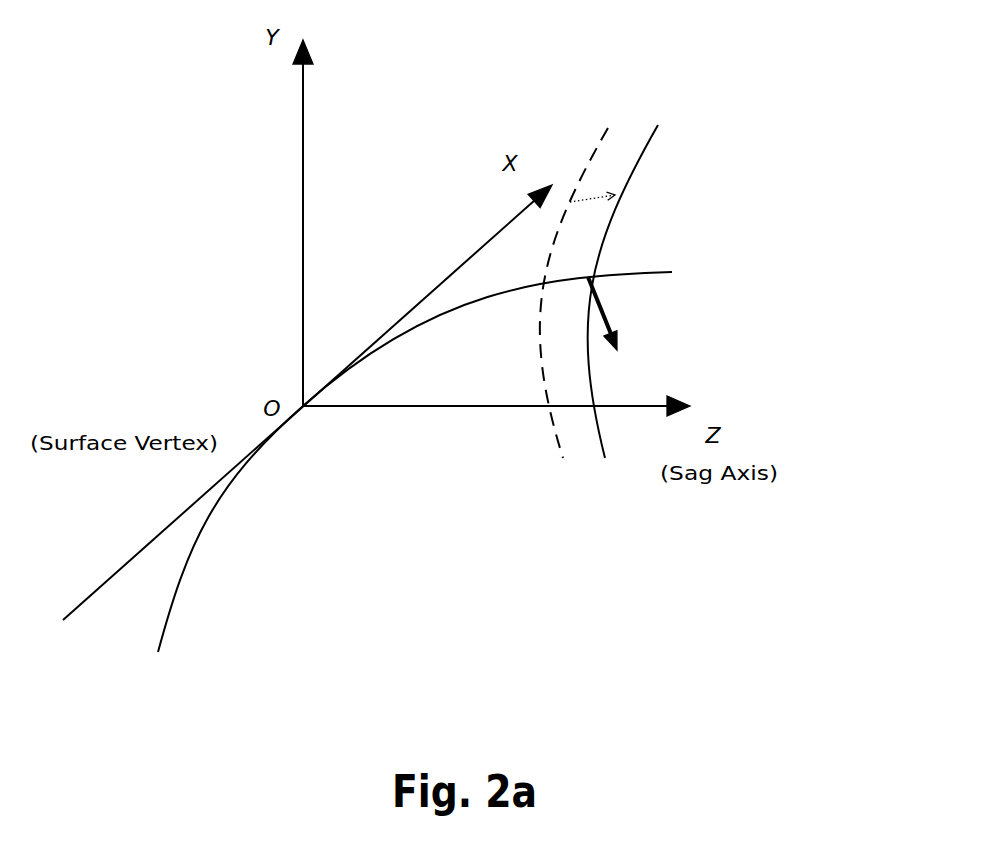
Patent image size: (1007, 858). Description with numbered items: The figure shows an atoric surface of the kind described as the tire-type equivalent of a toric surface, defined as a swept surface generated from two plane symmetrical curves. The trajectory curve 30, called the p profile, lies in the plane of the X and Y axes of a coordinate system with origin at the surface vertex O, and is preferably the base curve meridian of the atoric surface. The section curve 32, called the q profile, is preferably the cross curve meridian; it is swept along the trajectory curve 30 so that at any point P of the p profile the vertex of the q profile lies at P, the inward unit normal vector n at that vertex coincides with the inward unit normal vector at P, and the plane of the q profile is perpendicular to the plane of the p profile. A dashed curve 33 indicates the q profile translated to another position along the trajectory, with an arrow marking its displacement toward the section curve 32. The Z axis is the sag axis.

The trajectory curve (p profile) 30 is at (457, 460).
The section curve (q profile) 32 is at (702, 262).
The offset section curve (dashed q profile) 33 is at (513, 293).